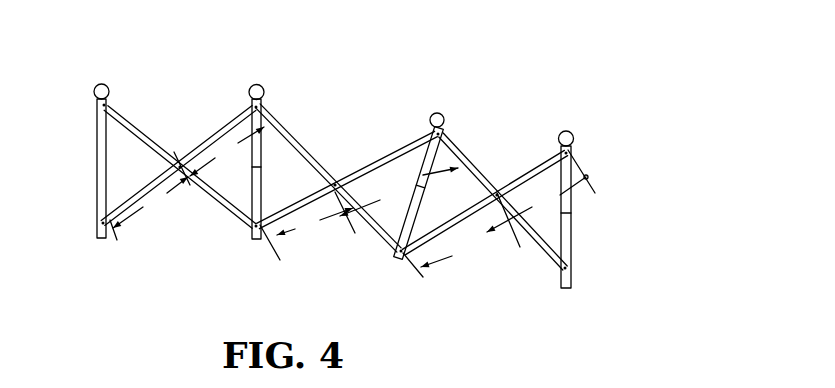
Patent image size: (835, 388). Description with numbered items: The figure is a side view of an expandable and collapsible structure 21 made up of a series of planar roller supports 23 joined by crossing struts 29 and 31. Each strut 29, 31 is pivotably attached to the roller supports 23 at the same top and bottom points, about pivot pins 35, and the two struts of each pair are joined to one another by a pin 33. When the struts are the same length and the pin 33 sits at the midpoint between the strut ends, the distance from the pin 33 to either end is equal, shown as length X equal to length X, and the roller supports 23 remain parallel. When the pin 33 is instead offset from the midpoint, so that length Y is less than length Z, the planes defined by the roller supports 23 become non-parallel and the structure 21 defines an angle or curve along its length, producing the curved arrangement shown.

The structure 21 is at (668, 163).
The roller support 23 is at (105, 135).
The strut 29 is at (111, 214).
The strut 31 is at (135, 143).
The pin 33 is at (179, 163).
The pivot pin 35 is at (90, 103).